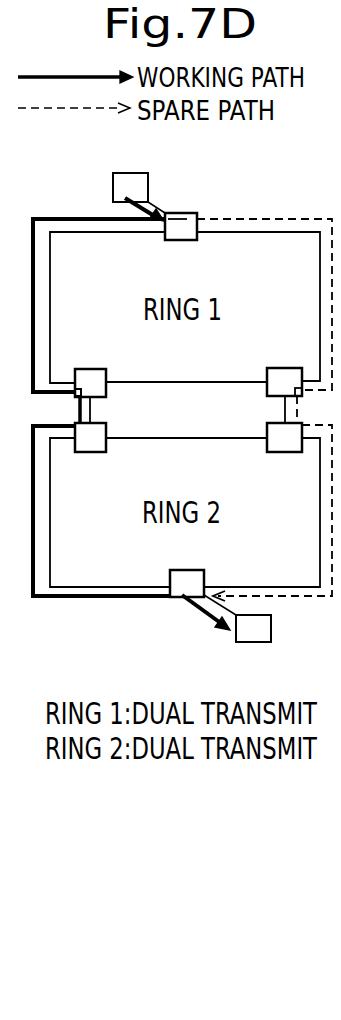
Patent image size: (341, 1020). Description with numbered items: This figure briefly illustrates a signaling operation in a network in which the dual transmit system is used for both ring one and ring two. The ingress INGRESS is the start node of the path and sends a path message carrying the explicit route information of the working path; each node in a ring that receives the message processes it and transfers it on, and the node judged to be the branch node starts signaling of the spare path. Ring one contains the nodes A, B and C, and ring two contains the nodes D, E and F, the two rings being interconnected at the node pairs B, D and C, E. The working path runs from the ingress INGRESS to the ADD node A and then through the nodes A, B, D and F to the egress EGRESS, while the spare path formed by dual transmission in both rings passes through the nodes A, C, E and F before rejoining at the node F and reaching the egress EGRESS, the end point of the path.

The ADD node A is at (181, 212).
The node B is at (90, 368).
The node C is at (284, 368).
The node D is at (90, 454).
The node E is at (284, 454).
The node F is at (187, 602).
The ingress node INGRESS is at (130, 172).
The egress EGRESS is at (252, 646).